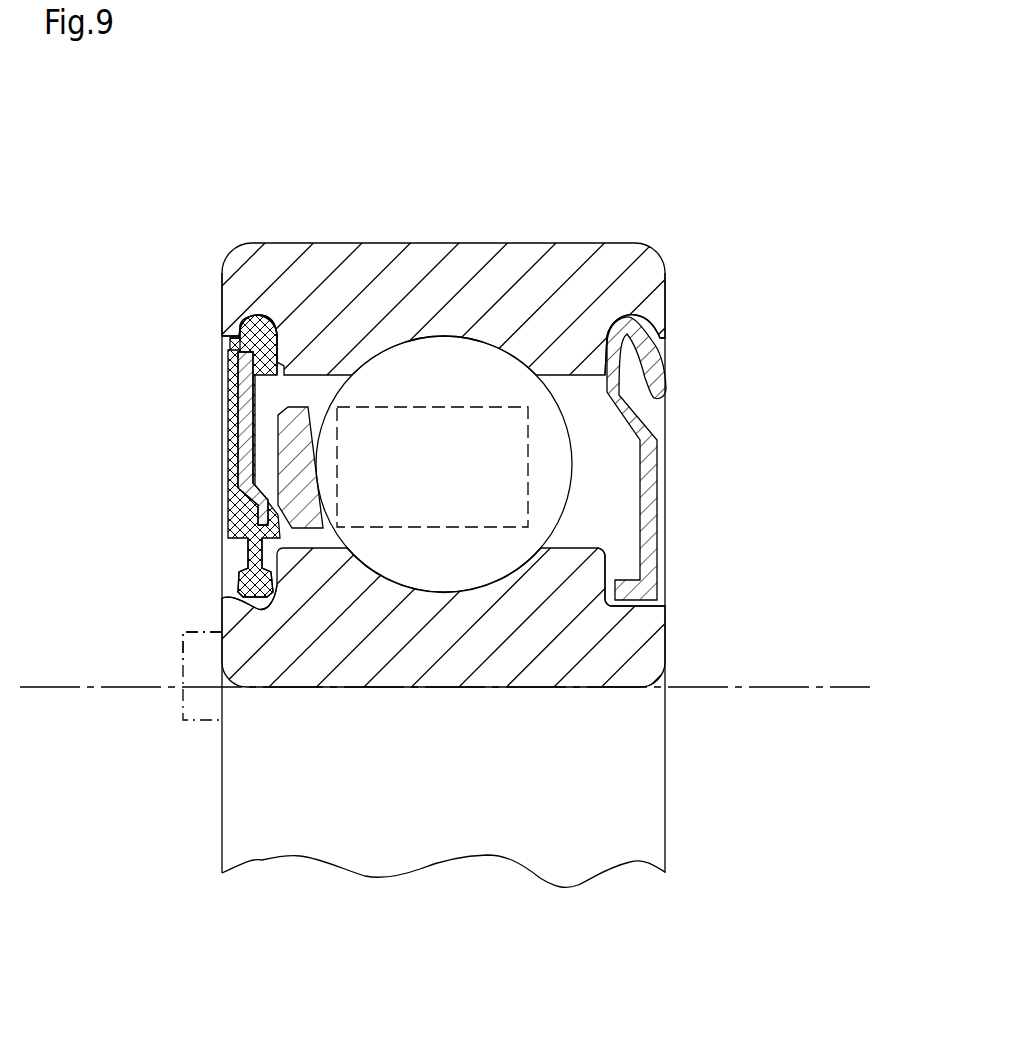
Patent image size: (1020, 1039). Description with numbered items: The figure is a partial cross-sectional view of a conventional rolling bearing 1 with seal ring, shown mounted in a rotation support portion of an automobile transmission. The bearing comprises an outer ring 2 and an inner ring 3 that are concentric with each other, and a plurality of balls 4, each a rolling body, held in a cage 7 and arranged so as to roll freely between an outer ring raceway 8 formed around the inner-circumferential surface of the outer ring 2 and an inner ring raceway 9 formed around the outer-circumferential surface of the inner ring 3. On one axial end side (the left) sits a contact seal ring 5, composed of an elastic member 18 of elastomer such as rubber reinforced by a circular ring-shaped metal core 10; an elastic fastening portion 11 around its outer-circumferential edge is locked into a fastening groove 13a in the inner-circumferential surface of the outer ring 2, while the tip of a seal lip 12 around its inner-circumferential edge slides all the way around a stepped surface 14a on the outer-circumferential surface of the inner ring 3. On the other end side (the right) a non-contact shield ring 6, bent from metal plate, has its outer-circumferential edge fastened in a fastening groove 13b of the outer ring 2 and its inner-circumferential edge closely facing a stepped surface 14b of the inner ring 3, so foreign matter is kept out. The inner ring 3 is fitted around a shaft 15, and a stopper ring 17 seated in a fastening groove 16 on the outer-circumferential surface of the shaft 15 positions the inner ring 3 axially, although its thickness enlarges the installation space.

The rolling bearing with seal ring 1 is at (657, 186).
The outer ring 2 is at (447, 285).
The inner ring 3 is at (375, 670).
The ball 4 is at (477, 372).
The seal ring 5 is at (216, 424).
The shield ring 6 is at (650, 477).
The cage 7 is at (300, 432).
The outer ring raceway 8 is at (430, 340).
The inner ring raceway 9 is at (445, 584).
The metal core 10 is at (228, 402).
The elastic fastening portion 11 is at (263, 335).
The seal lip 12 is at (246, 586).
The fastening groove 13a is at (233, 340).
The fastening groove 13b is at (641, 340).
The stepped surface 14a is at (243, 562).
The stepped surface 14b is at (606, 574).
The shaft 15 is at (710, 723).
The fastening groove 16 is at (206, 715).
The stopper ring 17 is at (203, 656).
The elastic member 18 is at (236, 448).